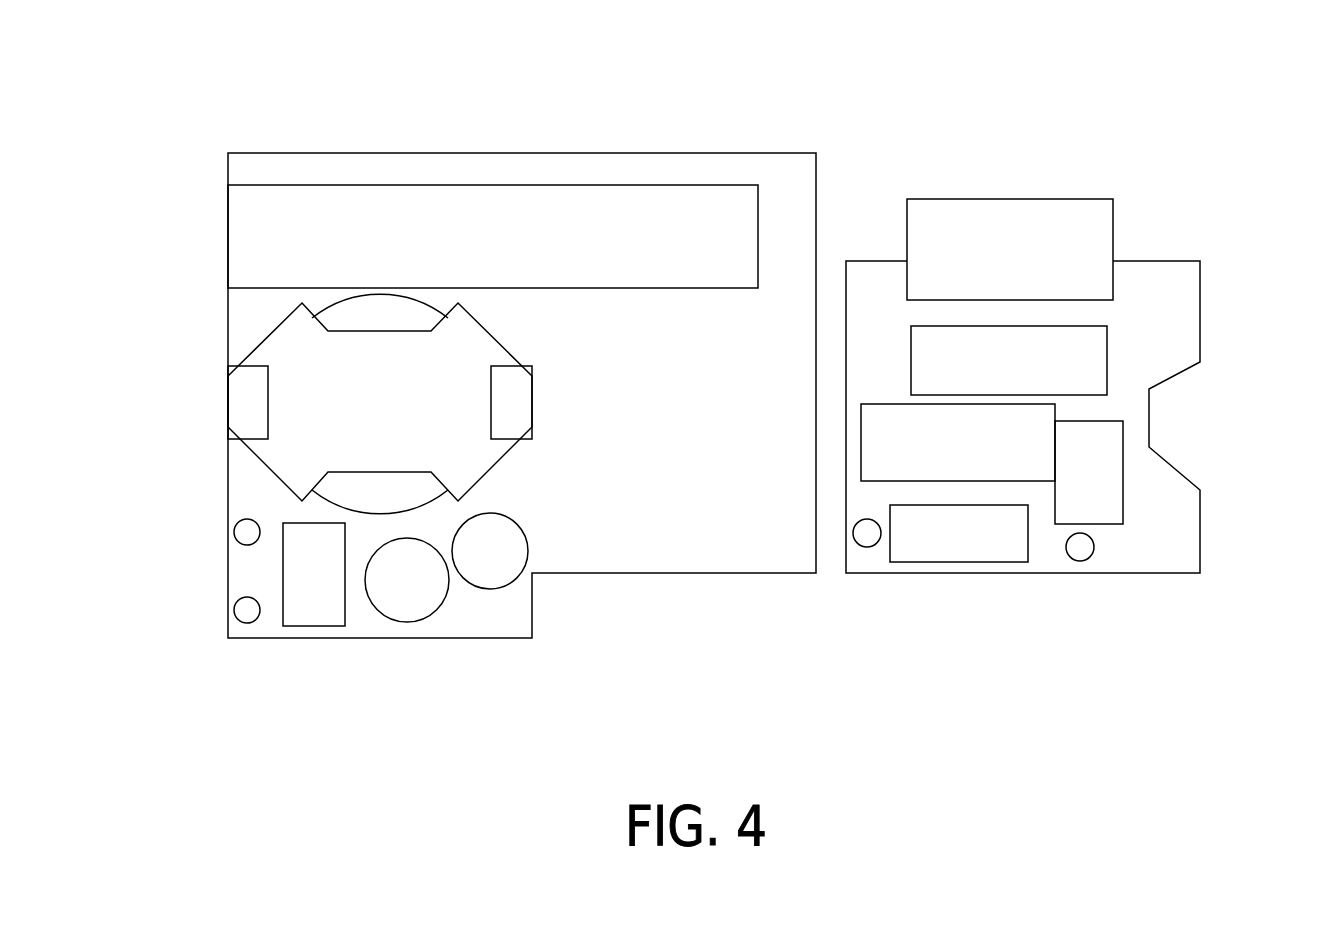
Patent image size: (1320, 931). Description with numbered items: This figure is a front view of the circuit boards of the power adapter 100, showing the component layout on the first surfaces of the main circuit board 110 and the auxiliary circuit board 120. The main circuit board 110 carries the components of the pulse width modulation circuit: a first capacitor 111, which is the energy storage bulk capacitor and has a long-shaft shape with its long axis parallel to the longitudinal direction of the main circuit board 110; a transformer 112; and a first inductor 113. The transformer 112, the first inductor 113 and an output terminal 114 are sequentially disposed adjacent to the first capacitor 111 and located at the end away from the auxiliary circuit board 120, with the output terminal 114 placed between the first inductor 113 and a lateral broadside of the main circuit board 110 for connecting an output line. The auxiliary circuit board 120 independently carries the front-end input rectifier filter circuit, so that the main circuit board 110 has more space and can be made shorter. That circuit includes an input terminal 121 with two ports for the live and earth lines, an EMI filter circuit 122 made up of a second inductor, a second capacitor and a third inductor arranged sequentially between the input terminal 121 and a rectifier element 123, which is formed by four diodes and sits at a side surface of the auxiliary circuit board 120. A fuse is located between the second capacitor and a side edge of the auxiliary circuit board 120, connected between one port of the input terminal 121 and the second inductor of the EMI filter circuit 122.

The power adapter 100 is at (182, 60).
The main circuit board 110 is at (456, 435).
The first capacitor 111 is at (318, 231).
The transformer 112 is at (317, 413).
The first inductor 113 is at (312, 604).
The output terminal 114 is at (249, 609).
The auxiliary circuit board 120 is at (1078, 443).
The input terminal 121 is at (1078, 548).
The EMI filter circuit 122 is at (992, 516).
The rectifier element 123 is at (1050, 232).